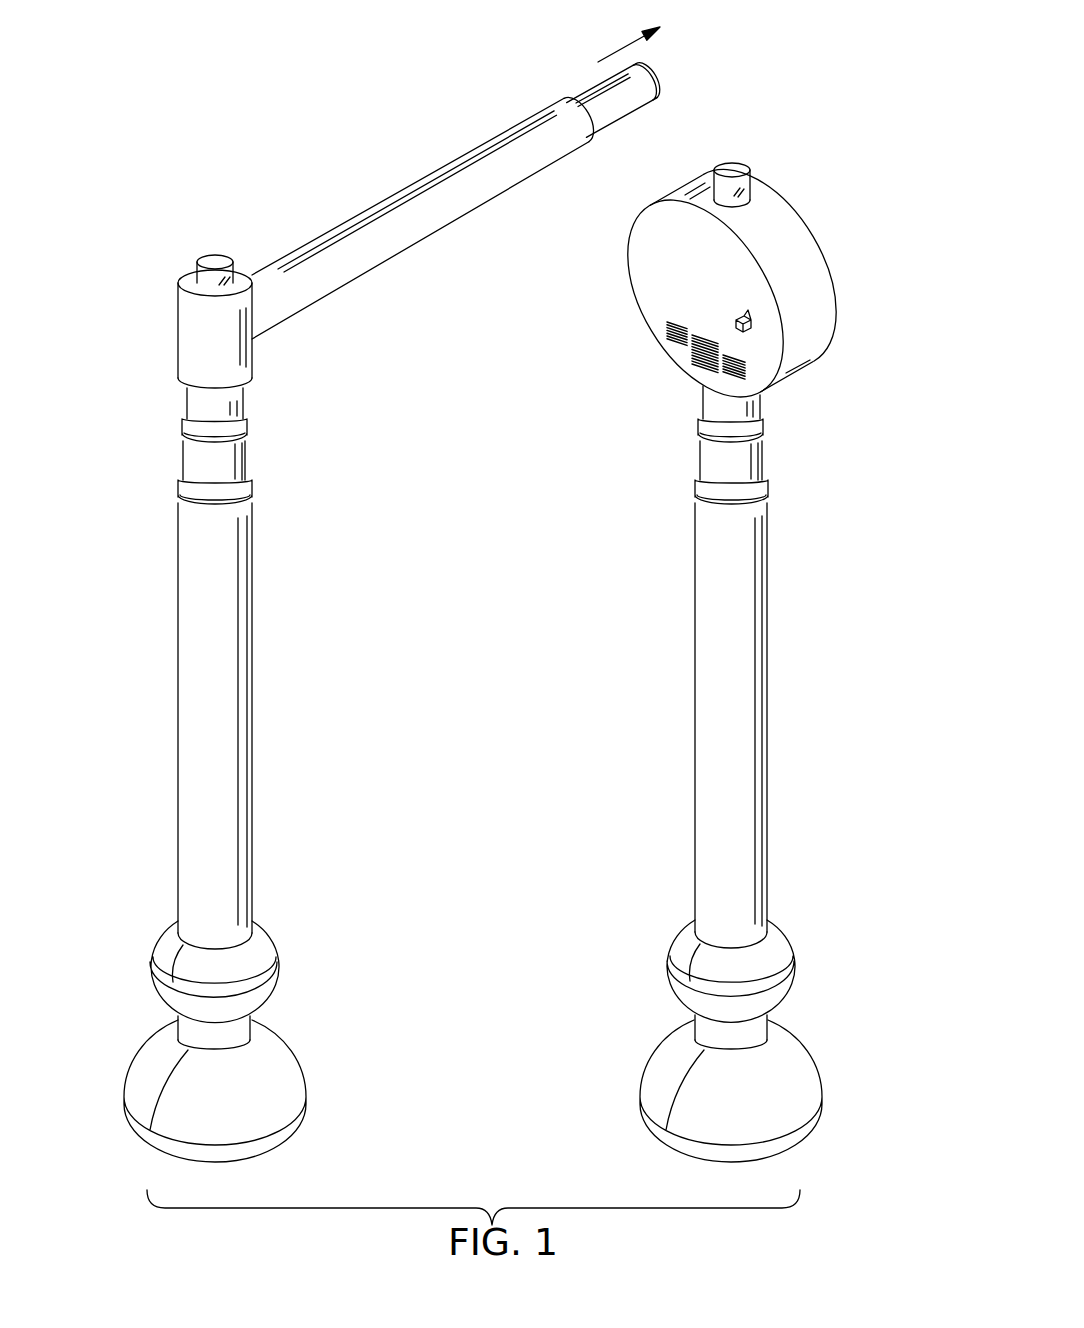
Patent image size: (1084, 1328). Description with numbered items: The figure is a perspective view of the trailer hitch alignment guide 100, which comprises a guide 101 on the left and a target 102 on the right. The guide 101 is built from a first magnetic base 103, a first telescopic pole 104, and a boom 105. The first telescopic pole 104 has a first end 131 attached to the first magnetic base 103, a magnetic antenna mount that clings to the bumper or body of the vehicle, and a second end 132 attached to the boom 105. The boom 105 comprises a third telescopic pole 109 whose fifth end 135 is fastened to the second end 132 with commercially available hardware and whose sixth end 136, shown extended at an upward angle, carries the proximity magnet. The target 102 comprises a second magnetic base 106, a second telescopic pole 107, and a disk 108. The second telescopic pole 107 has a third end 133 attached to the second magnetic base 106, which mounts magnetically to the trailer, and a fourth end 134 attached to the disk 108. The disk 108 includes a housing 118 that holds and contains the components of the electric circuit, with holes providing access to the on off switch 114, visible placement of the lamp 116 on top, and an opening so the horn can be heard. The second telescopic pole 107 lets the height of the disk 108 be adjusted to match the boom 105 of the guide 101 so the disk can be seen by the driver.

The trailer hitch alignment guide 100 is at (160, 140).
The guide 101 is at (320, 200).
The target 102 is at (836, 208).
The first magnetic base 103 is at (283, 1055).
The first telescopic pole 104 is at (245, 657).
The boom 105 is at (388, 212).
The second magnetic base 106 is at (803, 1063).
The second telescopic pole 107 is at (757, 773).
The disk 108 is at (820, 297).
The third telescopic pole 109 is at (385, 250).
The on off switch 114 is at (752, 323).
The lamp 116 is at (745, 168).
The housing 118 is at (813, 273).
The first end 131 is at (252, 895).
The second end 132 is at (250, 357).
The third end 133 is at (765, 895).
The fourth end 134 is at (755, 405).
The fifth end 135 is at (270, 273).
The sixth end 136 is at (660, 83).